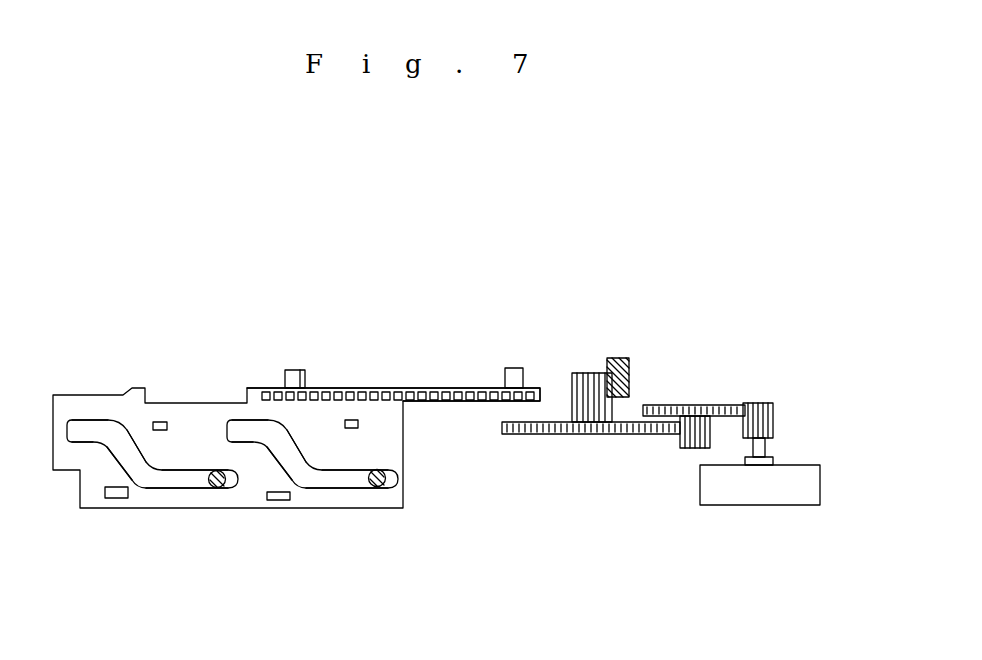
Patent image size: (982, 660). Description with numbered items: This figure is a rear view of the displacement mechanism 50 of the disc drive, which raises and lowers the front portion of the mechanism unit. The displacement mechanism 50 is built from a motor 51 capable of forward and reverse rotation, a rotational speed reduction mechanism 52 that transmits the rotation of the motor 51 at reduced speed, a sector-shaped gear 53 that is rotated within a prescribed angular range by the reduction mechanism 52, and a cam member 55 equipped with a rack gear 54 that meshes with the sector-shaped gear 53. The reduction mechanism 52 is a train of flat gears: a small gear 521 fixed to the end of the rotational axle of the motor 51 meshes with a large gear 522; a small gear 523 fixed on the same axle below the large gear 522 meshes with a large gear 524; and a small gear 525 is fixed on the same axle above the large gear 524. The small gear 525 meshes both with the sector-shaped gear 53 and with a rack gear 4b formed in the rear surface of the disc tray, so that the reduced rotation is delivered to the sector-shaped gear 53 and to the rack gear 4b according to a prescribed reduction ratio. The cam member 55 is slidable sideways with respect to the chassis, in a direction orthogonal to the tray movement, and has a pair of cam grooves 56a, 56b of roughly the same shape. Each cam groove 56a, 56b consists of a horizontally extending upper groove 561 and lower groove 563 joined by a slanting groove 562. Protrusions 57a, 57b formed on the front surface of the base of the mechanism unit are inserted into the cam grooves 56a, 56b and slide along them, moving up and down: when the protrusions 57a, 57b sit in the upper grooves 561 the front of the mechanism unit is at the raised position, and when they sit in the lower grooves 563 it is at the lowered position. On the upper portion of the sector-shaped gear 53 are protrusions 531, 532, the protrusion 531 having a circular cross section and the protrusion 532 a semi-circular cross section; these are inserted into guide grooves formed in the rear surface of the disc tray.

The displacement mechanism 50 is at (703, 270).
The motor 51 is at (760, 497).
The rotational speed reduction mechanism 52 is at (670, 405).
The small gear 521 is at (774, 410).
The large gear 522 is at (730, 405).
The small gear 523 is at (697, 443).
The large gear 524 is at (540, 434).
The small gear 525 is at (598, 373).
The sector-shaped gear 53 is at (480, 388).
The protrusion 531 is at (514, 368).
The protrusion 532 is at (297, 370).
The rack gear 54 is at (357, 388).
The cam member 55 is at (403, 447).
The cam groove 56a is at (148, 488).
The cam groove 56b is at (307, 490).
The upper groove 561 is at (87, 428).
The slanting groove 562 is at (122, 455).
The lower groove 563 is at (190, 473).
The protrusion 57a is at (212, 490).
The protrusion 57b is at (381, 490).
The rack gear 4b is at (620, 360).